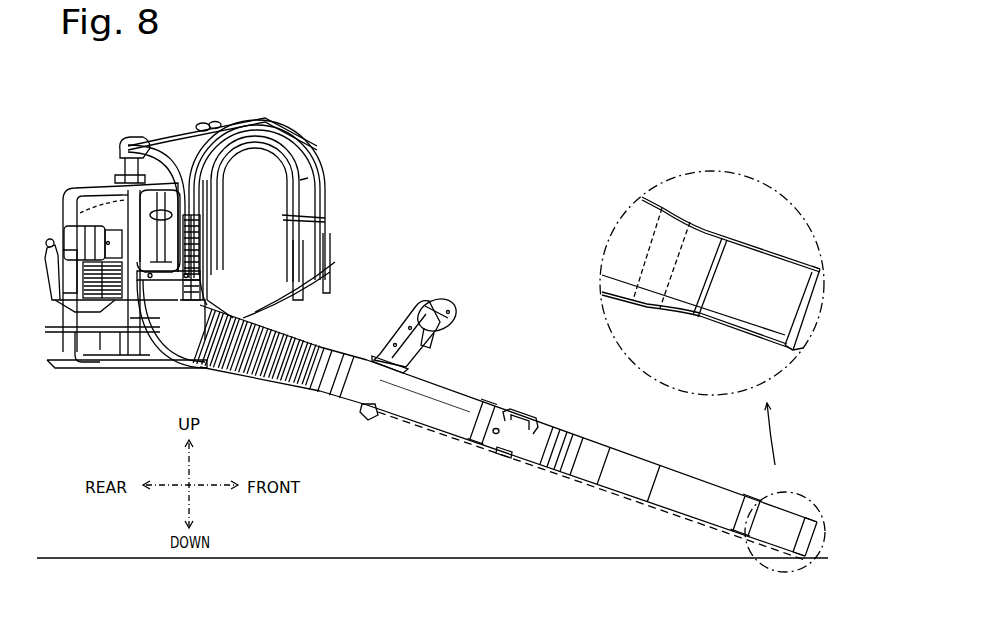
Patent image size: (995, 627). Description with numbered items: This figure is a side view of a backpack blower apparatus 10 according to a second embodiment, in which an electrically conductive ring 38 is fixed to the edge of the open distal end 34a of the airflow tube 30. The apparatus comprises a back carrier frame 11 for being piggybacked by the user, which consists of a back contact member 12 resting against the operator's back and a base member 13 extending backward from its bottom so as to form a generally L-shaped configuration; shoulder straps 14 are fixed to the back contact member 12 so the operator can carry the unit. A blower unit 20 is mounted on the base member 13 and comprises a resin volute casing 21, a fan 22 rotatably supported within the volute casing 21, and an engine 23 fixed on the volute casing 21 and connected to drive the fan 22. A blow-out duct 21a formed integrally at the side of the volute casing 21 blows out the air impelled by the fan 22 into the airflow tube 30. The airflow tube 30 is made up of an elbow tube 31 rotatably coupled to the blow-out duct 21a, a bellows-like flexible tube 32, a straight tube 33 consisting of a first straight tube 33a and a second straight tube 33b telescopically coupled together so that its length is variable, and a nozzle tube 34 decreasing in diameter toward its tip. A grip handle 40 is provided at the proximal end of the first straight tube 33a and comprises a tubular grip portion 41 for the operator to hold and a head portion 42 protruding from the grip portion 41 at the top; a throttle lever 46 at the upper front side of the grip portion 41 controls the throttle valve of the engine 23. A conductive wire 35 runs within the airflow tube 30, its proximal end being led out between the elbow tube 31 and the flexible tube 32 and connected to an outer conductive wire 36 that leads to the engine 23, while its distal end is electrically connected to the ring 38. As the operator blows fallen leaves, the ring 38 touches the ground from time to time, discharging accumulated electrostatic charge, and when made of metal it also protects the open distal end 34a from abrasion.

The backpack blower apparatus 10 is at (362, 134).
The back carrier frame 11 is at (200, 197).
The back contact member 12 is at (200, 207).
The base member 13 is at (117, 360).
The shoulder strap 14 is at (298, 177).
The blower unit 20 is at (92, 167).
The volute casing 21 is at (137, 180).
The blow-out duct 21a is at (177, 250).
The fan 22 is at (118, 143).
The engine 23 is at (75, 190).
The airflow tube 30 is at (538, 360).
The elbow tube 31 is at (180, 330).
The flexible tube 32 is at (250, 375).
The straight tube 33 is at (532, 458).
The first straight tube 33a is at (443, 423).
The second straight tube 33b is at (633, 493).
The nozzle tube 34 is at (793, 517).
The open distal end 34a is at (793, 350).
The conductive wire 35 is at (577, 480).
The outer conductive wire 36 is at (167, 340).
The electrically conductive ring 38 is at (817, 528).
The grip handle 40 is at (425, 284).
The grip portion 41 is at (408, 322).
The head portion 42 is at (443, 303).
The throttle lever 46 is at (433, 338).